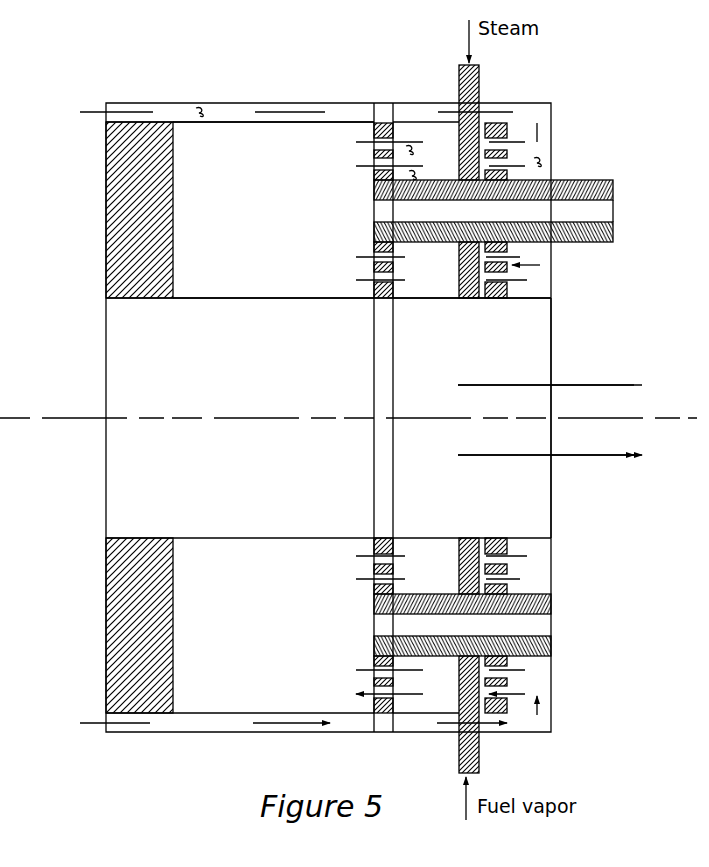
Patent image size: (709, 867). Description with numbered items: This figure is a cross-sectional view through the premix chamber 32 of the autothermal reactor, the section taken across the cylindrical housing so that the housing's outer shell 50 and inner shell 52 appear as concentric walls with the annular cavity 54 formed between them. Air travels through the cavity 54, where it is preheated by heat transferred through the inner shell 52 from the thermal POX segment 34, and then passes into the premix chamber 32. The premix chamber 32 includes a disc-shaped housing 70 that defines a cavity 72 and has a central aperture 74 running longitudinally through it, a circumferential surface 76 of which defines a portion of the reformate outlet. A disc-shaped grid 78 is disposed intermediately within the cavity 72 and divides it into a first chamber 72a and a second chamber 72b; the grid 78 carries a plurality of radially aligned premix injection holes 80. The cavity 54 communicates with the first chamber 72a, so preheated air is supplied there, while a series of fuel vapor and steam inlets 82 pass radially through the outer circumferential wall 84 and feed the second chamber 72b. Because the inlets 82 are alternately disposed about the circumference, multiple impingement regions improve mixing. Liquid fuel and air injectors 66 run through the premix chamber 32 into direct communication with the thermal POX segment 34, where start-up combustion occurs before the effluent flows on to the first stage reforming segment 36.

The premix chamber 32 is at (414, 116).
The thermal partial oxidization (POX) segment 34 is at (323, 140).
The first stage reforming segment 36 is at (120, 148).
The outer shell 50 is at (159, 100).
The inner shell 52 is at (237, 120).
The annular cavity 54 is at (203, 107).
The liquid fuel and air injectors 66 is at (614, 238).
The disc-shaped housing 70 is at (403, 122).
The cavity 72 is at (406, 150).
The first chamber 72a is at (540, 160).
The second chamber 72b is at (410, 175).
The central aperture 74 is at (545, 333).
The circumferential surface 76 is at (531, 303).
The disc-shaped grid 78 is at (540, 265).
The premix injection holes 80 is at (506, 142).
The fuel vapor and water (steam) inlets 82 is at (479, 78).
The outer circumferential wall 84 is at (434, 122).